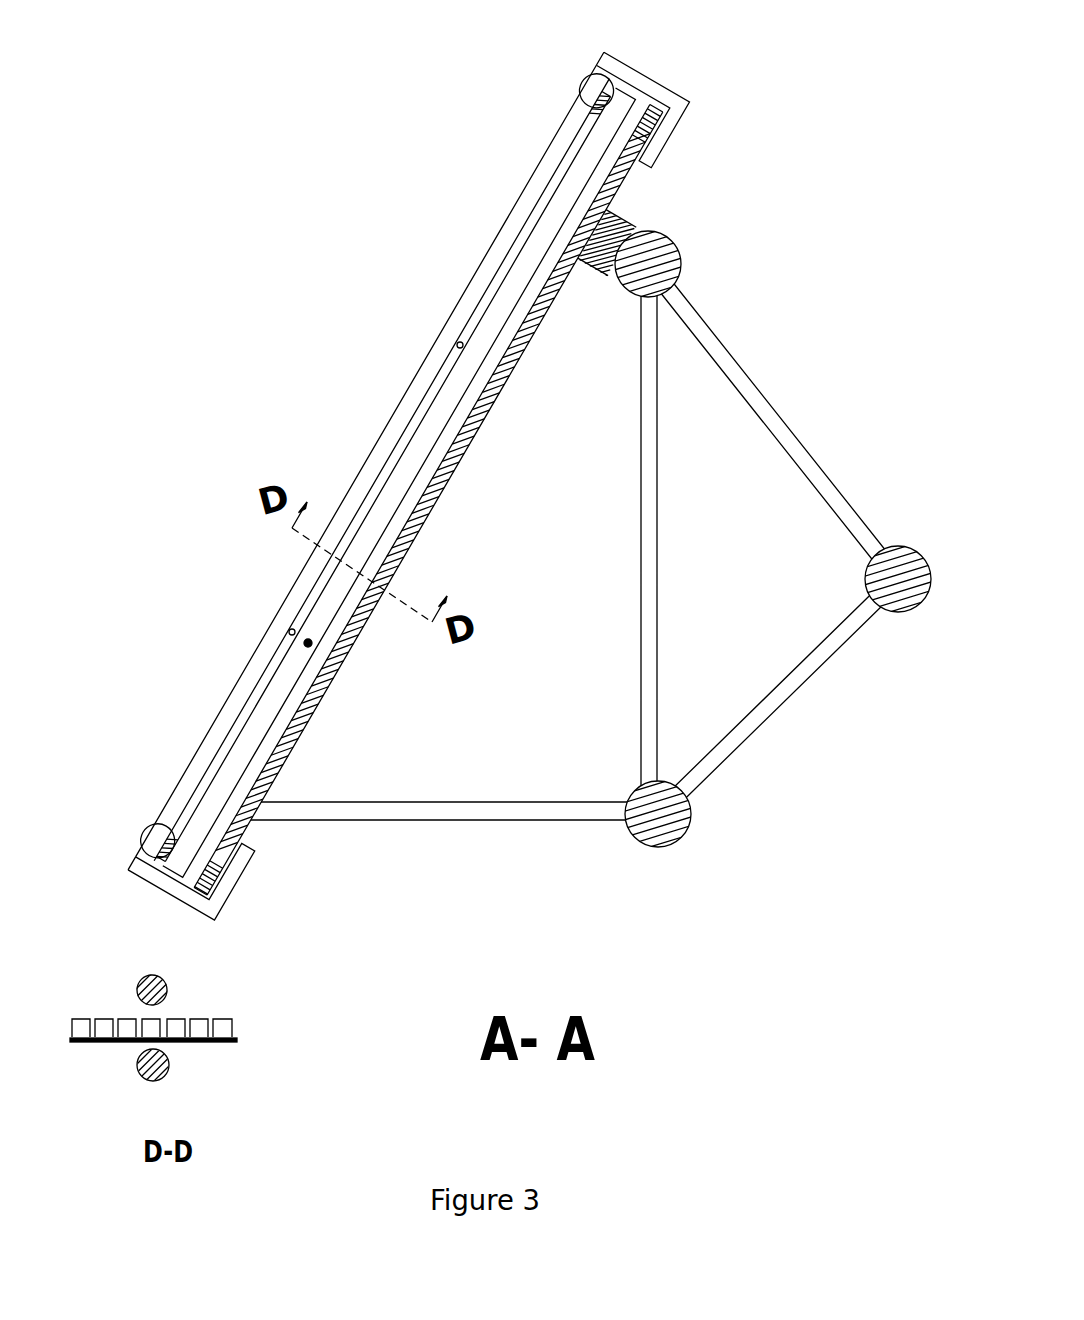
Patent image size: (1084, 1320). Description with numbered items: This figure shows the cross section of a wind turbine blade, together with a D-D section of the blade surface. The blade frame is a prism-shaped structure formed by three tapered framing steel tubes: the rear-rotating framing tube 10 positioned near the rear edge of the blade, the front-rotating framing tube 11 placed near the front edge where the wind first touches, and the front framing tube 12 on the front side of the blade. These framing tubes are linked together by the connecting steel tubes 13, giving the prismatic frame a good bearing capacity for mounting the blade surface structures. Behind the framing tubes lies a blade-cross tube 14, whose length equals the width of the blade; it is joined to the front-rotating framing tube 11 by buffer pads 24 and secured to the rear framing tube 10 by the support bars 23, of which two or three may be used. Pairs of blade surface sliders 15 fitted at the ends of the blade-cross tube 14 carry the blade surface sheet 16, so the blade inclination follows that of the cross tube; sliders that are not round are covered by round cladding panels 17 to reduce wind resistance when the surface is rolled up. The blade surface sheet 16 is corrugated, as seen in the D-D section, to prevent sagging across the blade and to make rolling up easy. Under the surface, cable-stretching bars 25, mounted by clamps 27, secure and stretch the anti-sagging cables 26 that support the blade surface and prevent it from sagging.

The rear-rotating framing tube 10 is at (663, 818).
The front-rotating framing tube 11 is at (642, 257).
The front framing tube 12 is at (910, 557).
The connecting steel tubes 13 is at (647, 448).
The blade-cross tube 14 is at (612, 176).
The blade surface slider 15 is at (598, 84).
The corrugated metal sheet 16 is at (305, 645).
The round cladding panel 17 is at (143, 833).
The support bar 23 is at (378, 815).
The buffer pad 24 is at (626, 246).
The cable-stretching bar 25 is at (437, 357).
The anti-sagging cable 26 is at (289, 630).
The clamp 27 is at (613, 64).